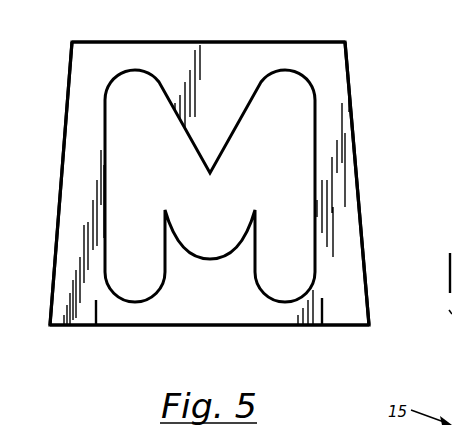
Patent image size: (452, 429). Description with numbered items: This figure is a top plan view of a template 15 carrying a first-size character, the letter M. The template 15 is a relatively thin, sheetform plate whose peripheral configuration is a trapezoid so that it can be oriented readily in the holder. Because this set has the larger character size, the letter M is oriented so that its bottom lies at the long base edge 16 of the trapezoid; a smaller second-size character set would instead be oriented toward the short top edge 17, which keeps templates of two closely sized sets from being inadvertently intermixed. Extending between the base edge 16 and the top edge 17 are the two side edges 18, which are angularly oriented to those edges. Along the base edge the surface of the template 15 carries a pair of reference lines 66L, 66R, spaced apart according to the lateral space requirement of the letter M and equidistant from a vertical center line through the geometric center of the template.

The template 15 is at (349, 83).
The base edge 16 is at (281, 326).
The top edge 17 is at (198, 42).
The side edges 18 is at (70, 60).
The reference line 66L is at (97, 308).
The reference line 66R is at (324, 310).